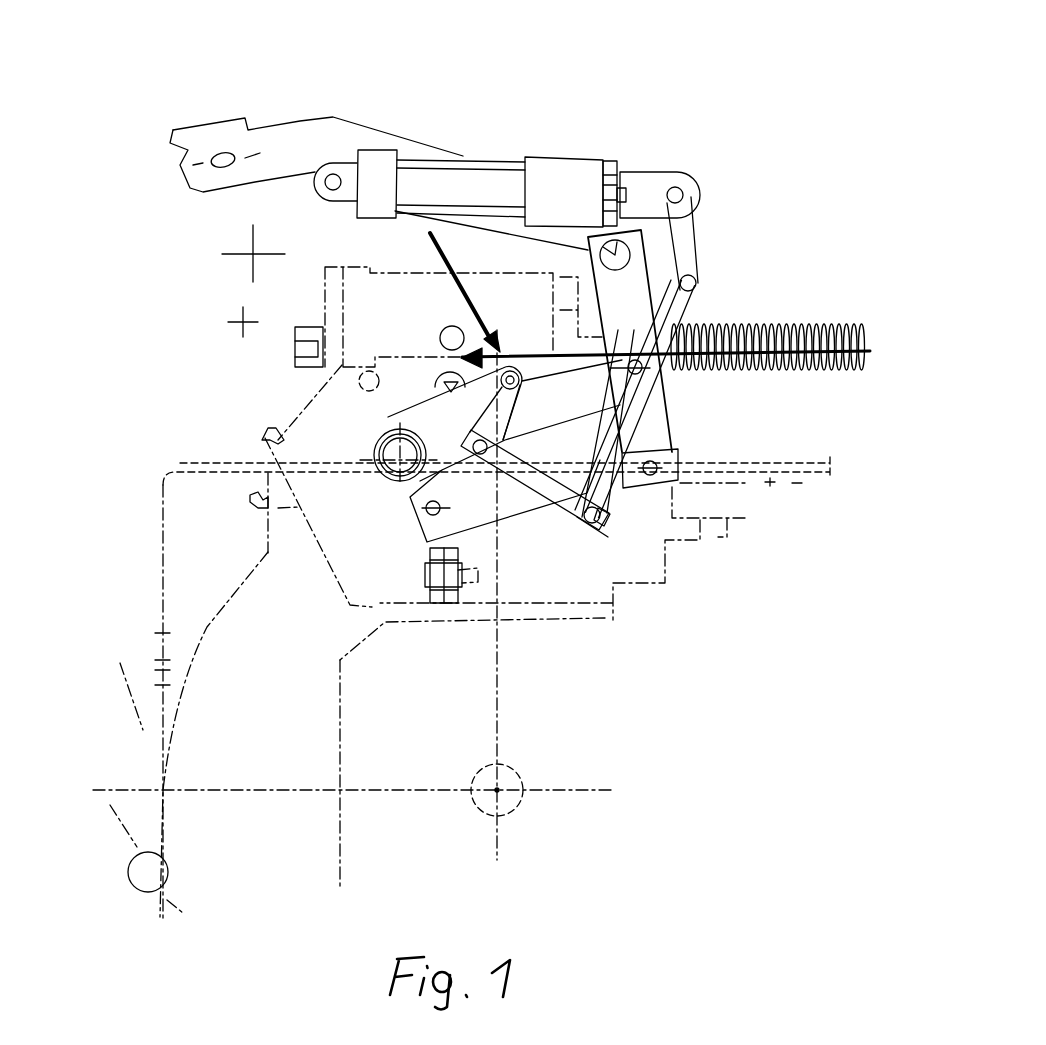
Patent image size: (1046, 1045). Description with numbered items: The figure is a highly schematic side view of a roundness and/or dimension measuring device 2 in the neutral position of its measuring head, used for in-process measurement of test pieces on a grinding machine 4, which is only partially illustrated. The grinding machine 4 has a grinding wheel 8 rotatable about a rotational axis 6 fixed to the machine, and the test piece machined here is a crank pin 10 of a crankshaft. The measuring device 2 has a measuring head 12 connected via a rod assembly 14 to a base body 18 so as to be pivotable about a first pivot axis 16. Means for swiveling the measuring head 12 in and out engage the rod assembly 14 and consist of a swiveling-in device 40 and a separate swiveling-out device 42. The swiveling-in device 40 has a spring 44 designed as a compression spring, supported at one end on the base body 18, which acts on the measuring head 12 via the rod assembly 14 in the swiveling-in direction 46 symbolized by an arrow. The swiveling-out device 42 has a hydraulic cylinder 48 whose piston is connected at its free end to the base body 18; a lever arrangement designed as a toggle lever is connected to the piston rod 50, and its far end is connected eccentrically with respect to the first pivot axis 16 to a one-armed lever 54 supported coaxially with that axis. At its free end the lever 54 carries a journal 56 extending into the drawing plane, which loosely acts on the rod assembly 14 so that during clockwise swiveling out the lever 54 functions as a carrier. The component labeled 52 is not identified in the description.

The measuring device 2 is at (582, 84).
The grinding machine 4 is at (128, 590).
The rotational axis 6 is at (497, 790).
The grinding wheel 8 is at (223, 610).
The crank pin 10 is at (130, 870).
The measuring head 12 is at (276, 94).
The rod assembly 14 is at (516, 530).
The first pivot axis 16 is at (388, 426).
The base body 18 is at (298, 418).
The swiveling-in device 40 is at (746, 314).
The swiveling-out device 42 is at (677, 134).
The spring 44 is at (822, 325).
The swiveling-in direction 46 is at (84, 296).
The hydraulic cylinder 48 is at (483, 160).
The piston rod 50 is at (700, 190).
The plate 52 is at (702, 412).
The one-armed lever 54 is at (417, 424).
The journal 56 is at (589, 373).